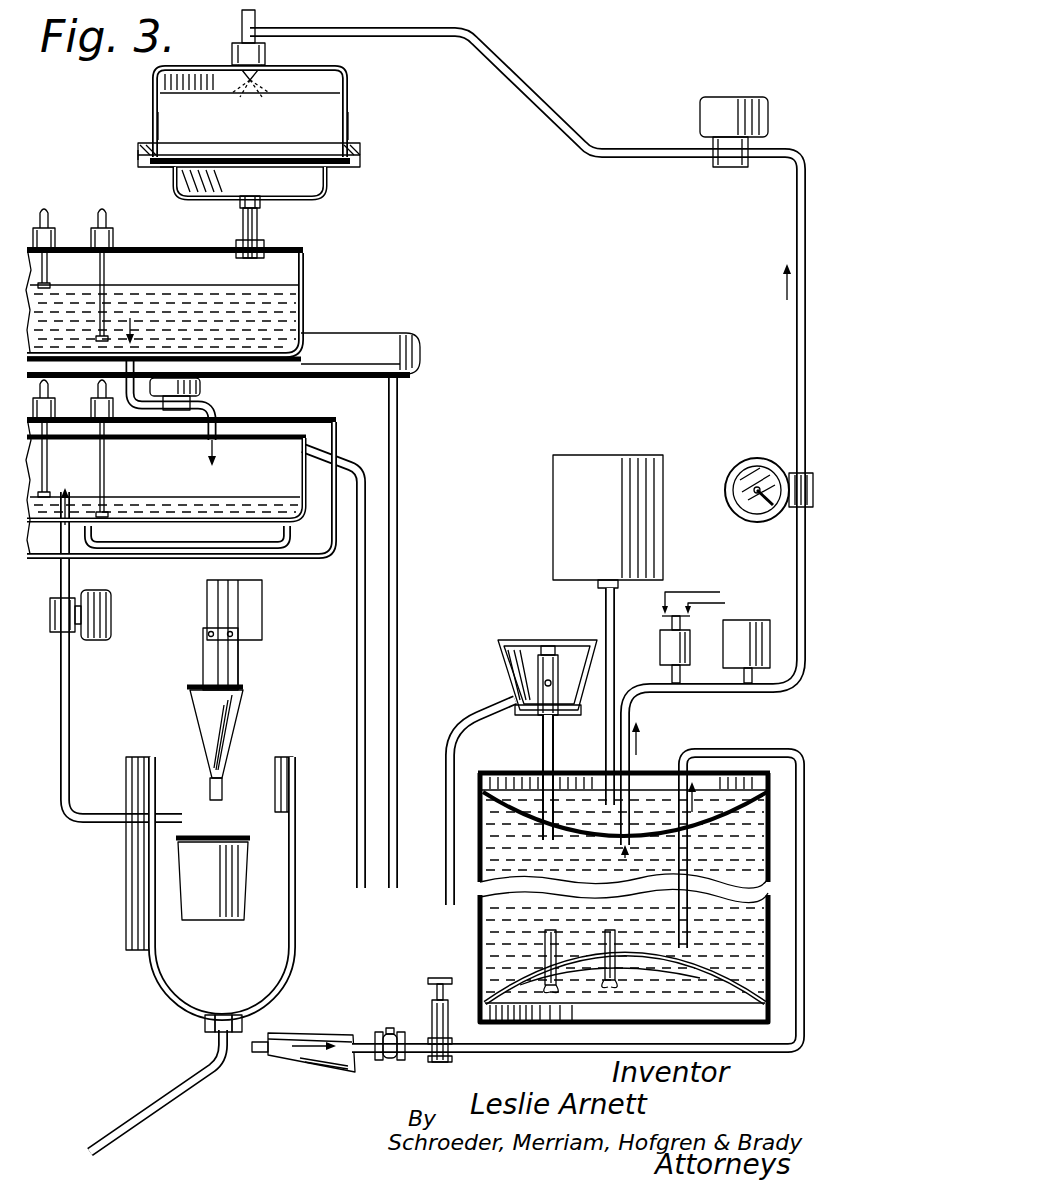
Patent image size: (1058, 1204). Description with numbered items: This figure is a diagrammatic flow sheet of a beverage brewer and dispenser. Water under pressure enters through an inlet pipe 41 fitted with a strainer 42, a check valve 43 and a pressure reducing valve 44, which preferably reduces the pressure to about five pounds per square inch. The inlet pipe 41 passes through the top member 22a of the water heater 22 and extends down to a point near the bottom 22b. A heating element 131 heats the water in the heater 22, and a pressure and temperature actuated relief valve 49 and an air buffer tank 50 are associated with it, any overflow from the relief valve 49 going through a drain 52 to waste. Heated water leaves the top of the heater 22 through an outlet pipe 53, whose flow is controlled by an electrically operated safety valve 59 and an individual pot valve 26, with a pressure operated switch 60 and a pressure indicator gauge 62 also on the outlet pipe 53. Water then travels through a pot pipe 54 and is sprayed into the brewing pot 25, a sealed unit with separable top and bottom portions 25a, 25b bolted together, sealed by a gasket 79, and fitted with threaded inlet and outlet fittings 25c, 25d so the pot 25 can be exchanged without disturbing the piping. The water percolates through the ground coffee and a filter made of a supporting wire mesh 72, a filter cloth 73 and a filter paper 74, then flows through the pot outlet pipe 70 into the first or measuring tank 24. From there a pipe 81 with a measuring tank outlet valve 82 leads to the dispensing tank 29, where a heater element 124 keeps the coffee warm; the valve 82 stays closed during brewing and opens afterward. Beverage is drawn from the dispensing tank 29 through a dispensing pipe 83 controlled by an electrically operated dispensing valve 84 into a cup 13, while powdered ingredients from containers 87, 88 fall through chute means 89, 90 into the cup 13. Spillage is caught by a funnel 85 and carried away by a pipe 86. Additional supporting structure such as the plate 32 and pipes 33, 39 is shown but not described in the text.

The cup 13 is at (213, 879).
The water heater 22 is at (478, 945).
The top member 22a is at (655, 805).
The bottom 22b is at (710, 975).
The first tank 24 is at (304, 288).
The brewing pot 25 is at (348, 102).
The top portion 25a is at (348, 124).
The bottom portion 25b is at (327, 185).
The inlet fitting 25c is at (265, 58).
The outlet fitting 25d is at (260, 204).
The pot valve 26 is at (740, 108).
The dispensing tank 29 is at (286, 436).
The plate 32 is at (422, 349).
The pipe 33 is at (398, 558).
The pipe 39 is at (356, 645).
The inlet pipe 41 is at (545, 1045).
The strainer 42 is at (322, 1066).
The check valve 43 is at (388, 1062).
The pressure reducing valve 44 is at (440, 1032).
The relief valve 49 is at (532, 645).
The air buffer tank 50 is at (592, 462).
The drain 52 is at (445, 878).
The outlet pipe 53 is at (797, 558).
The pot pipe 54 is at (598, 126).
The safety valve 59 is at (746, 625).
The pressure operated switch 60 is at (660, 640).
The pressure indicator gauge 62 is at (740, 465).
The pot outlet pipe 70 is at (241, 226).
The supporting wire mesh 72 is at (163, 170).
The filter cloth 73 is at (362, 158).
The filter paper 74 is at (155, 130).
The gasket 79 is at (138, 152).
The pipe 81 is at (214, 410).
The measuring tank outlet valve 82 is at (202, 387).
The dispensing pipe 83 is at (72, 676).
The dispensing valve 84 is at (113, 612).
The funnel 85 is at (160, 986).
The pipe 86 is at (152, 1118).
The container 87 is at (262, 614).
The container 88 is at (213, 592).
The chute means 89 is at (220, 666).
The chute means 90 is at (238, 717).
The heater element 124 is at (158, 536).
The heating element 131 is at (552, 930).